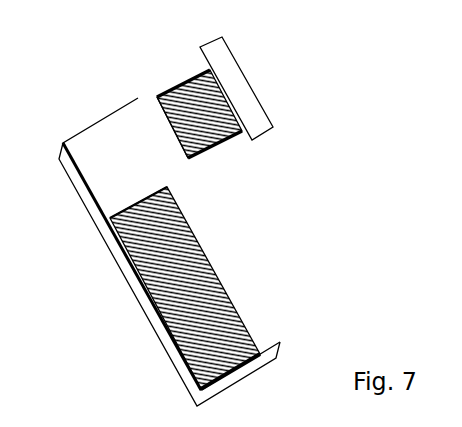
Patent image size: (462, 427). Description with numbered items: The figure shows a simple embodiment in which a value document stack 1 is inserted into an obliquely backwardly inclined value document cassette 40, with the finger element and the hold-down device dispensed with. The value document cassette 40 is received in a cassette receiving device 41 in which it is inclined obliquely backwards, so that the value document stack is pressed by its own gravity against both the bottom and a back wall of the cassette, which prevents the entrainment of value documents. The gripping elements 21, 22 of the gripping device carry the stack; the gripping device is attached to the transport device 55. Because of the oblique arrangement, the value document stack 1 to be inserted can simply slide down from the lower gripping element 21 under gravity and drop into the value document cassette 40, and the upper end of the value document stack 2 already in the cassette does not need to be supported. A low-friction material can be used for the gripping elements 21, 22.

The value document stack 1 is at (198, 114).
The value document stack 2 is at (185, 288).
The lower gripping element 21 is at (192, 157).
The gripping element 22 is at (152, 103).
The value document cassette 40 is at (135, 272).
The cassette receiving device 41 is at (182, 378).
The transport device 55 is at (246, 75).